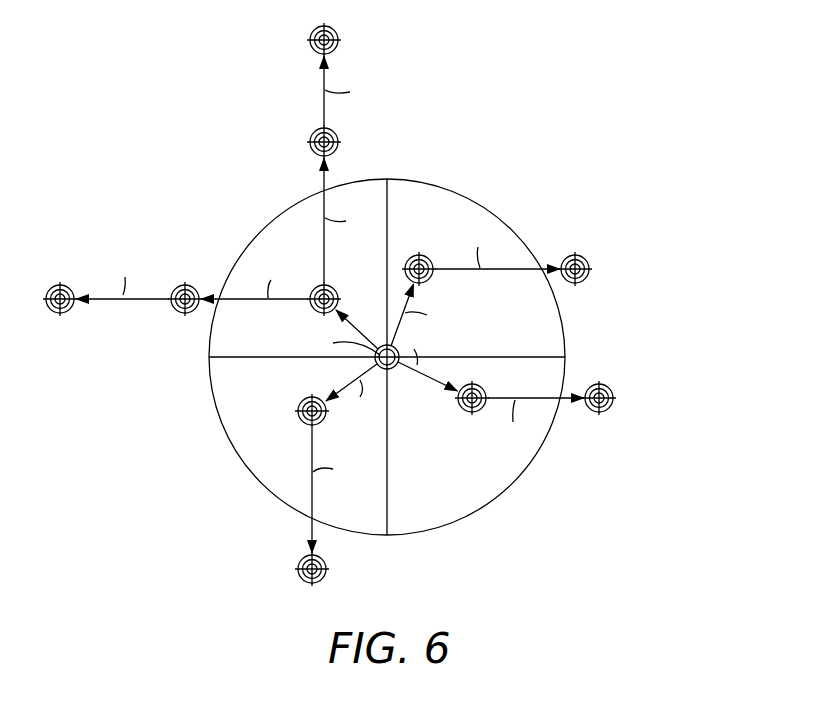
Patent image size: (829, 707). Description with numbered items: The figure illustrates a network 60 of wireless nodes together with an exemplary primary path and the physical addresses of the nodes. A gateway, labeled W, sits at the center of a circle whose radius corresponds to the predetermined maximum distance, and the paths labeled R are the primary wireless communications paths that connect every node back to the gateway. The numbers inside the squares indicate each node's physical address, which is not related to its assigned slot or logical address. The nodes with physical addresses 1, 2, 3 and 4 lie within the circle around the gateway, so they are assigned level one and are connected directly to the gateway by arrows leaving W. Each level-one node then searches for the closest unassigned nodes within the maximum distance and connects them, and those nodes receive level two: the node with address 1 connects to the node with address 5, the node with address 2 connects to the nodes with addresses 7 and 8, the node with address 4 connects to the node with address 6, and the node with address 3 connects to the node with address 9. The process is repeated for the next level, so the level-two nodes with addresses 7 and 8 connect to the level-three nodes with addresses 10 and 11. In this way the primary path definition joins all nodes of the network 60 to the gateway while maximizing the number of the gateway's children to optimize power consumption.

The network 60 is at (728, 176).
The node physical address 1 is at (304, 412).
The node physical address 2 is at (325, 286).
The node physical address 3 is at (472, 403).
The node physical address 4 is at (430, 260).
The node physical address 5 is at (310, 583).
The node physical address 6 is at (590, 258).
The node physical address 7 is at (175, 298).
The node physical address 8 is at (322, 142).
The node physical address 9 is at (615, 410).
The node physical address 10 is at (52, 298).
The node physical address 11 is at (322, 37).